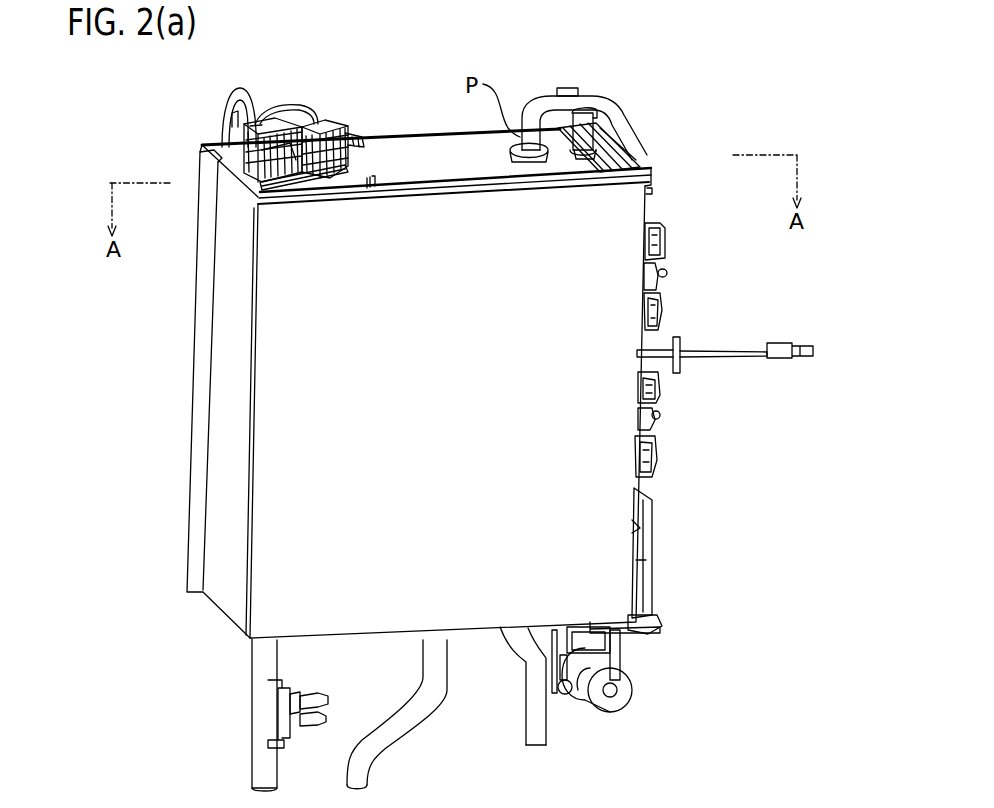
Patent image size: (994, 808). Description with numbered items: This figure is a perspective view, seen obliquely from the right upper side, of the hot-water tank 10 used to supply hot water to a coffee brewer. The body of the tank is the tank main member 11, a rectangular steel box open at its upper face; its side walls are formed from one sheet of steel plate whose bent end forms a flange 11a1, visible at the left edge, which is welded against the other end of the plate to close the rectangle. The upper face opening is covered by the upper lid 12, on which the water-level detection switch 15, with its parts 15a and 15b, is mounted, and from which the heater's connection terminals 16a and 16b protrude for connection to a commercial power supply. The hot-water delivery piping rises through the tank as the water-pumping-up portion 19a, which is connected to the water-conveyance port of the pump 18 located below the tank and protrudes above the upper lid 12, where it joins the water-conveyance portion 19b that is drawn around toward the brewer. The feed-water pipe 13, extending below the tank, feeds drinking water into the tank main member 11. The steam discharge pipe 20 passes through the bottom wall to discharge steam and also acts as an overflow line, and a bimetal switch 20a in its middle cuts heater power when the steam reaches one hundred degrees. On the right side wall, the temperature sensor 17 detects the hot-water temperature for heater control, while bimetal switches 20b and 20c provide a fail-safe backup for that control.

The hot-water tank 10 is at (168, 151).
The tank main member 11 is at (292, 376).
The flange 11a1 is at (195, 426).
The upper lid 12 is at (413, 148).
The feed-water pipe 13 is at (400, 720).
The water-level detection switch 15 is at (437, 262).
The terminal 15a is at (290, 203).
The terminal 15b is at (340, 193).
The connection terminal 16a is at (627, 130).
The connection terminal 16b is at (572, 88).
The temperature sensor 17 is at (680, 348).
The pump 18 is at (624, 688).
The water-pumping-up portion 19a is at (540, 745).
The water-conveyance portion 19b is at (628, 112).
The steam discharge pipe 20 is at (252, 695).
The bimetal switch 20a is at (265, 725).
The bimetal switch 20b is at (657, 253).
The bimetal switch 20c is at (656, 428).